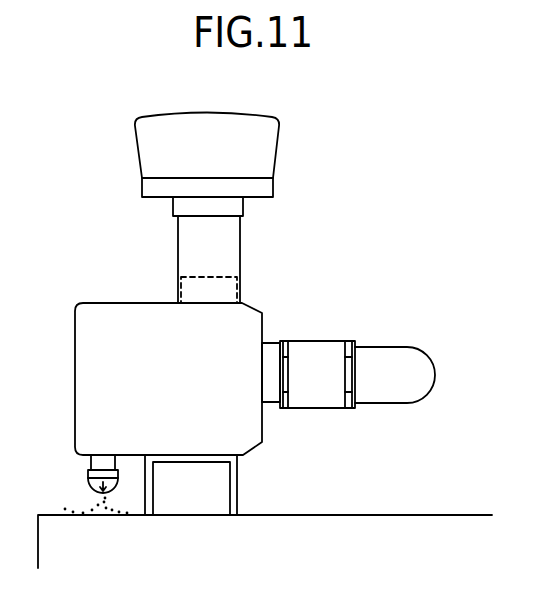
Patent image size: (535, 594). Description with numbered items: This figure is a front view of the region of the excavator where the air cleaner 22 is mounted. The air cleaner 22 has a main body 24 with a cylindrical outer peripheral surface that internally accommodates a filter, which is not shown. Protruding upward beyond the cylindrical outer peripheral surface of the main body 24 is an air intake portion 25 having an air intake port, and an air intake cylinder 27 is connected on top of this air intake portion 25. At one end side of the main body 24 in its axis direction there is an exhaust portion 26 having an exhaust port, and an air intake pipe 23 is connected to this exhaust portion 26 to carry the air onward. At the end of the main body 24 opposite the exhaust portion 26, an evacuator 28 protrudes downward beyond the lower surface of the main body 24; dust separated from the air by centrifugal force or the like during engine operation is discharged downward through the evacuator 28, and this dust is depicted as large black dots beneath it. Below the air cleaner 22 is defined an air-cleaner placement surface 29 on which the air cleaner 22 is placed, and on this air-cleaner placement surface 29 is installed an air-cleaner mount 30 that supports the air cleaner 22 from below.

The air cleaner 22 is at (272, 302).
The air intake pipe 23 is at (420, 350).
The main body 24 is at (130, 302).
The air intake portion 25 is at (220, 278).
The exhaust portion 26 is at (273, 405).
The air intake cylinder 27 is at (279, 163).
The evacuator 28 is at (88, 473).
The air-cleaner placement surface 29 is at (322, 515).
The air-cleaner mount 30 is at (237, 502).